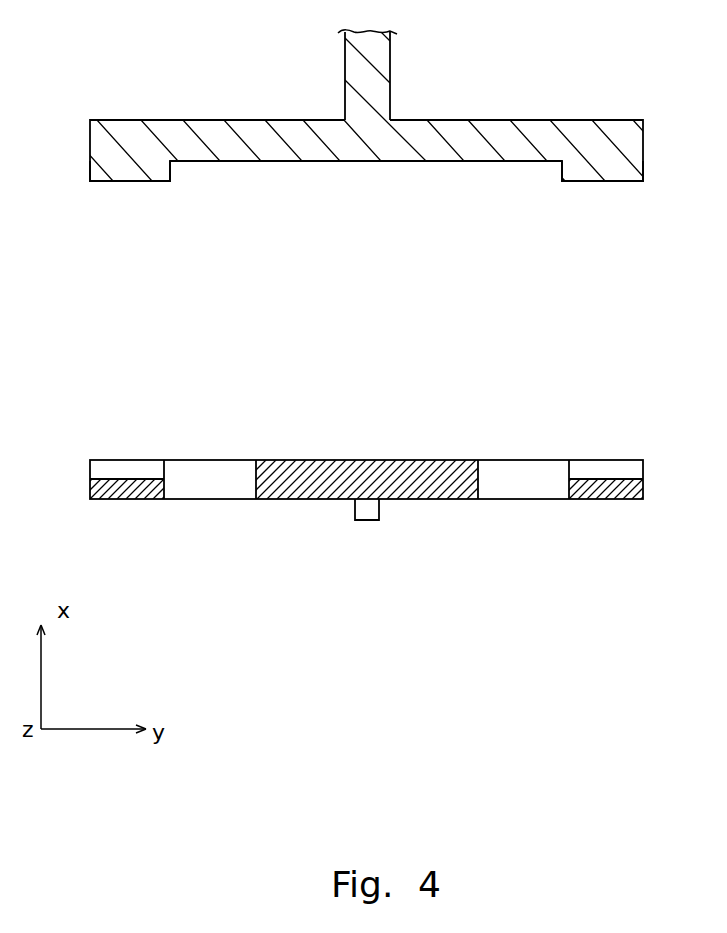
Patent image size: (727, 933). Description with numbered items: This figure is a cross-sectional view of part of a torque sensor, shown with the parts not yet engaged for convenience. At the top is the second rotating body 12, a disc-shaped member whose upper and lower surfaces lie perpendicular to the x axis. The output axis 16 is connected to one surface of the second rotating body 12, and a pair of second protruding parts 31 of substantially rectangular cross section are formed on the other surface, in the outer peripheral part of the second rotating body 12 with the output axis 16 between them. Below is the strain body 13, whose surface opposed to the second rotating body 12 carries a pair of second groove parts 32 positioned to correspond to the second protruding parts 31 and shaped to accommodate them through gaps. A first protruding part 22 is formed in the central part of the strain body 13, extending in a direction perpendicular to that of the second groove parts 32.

The second rotating body 12 is at (639, 99).
The strain body 13 is at (552, 441).
The output axis 16 is at (383, 60).
The first protruding part 22 is at (368, 511).
The second protruding part 31 is at (132, 174).
The second groove part 32 is at (120, 478).